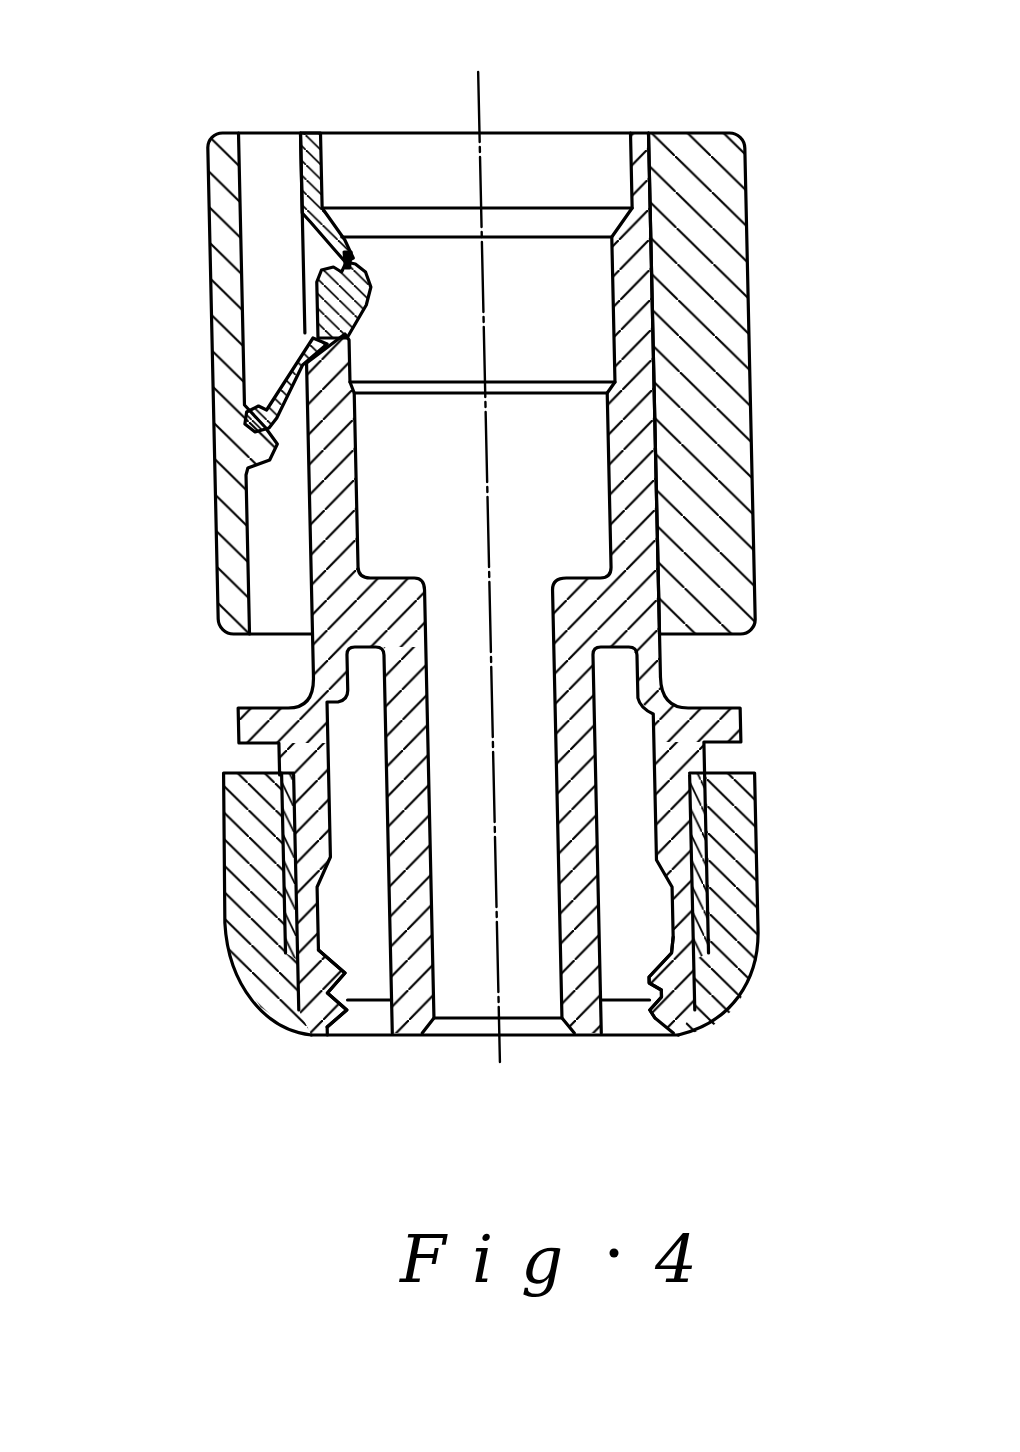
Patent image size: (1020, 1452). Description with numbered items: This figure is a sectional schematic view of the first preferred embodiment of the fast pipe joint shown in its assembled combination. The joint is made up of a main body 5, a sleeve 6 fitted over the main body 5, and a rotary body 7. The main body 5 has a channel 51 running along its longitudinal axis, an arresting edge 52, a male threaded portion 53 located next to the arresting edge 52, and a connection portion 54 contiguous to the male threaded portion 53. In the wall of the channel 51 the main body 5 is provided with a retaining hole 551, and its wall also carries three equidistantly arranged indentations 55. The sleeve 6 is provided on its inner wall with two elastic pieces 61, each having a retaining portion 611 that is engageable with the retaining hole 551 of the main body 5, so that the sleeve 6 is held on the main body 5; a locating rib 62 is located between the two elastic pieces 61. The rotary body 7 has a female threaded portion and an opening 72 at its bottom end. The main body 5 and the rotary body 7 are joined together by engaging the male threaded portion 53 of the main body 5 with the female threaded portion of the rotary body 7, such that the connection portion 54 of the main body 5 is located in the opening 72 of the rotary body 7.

The main body 5 is at (498, 568).
The channel 51 is at (561, 185).
The arresting edge 52 is at (722, 712).
The male threaded portion 53 is at (684, 850).
The connection portion 54 is at (670, 1036).
The indentations 55 is at (310, 245).
The retaining hole 551 is at (358, 333).
The sleeve 6 is at (496, 383).
The elastic piece 61 is at (277, 217).
The retaining portion 611 is at (357, 262).
The locating rib 62 is at (675, 344).
The rotary body 7 is at (250, 870).
The opening 72 is at (360, 1020).